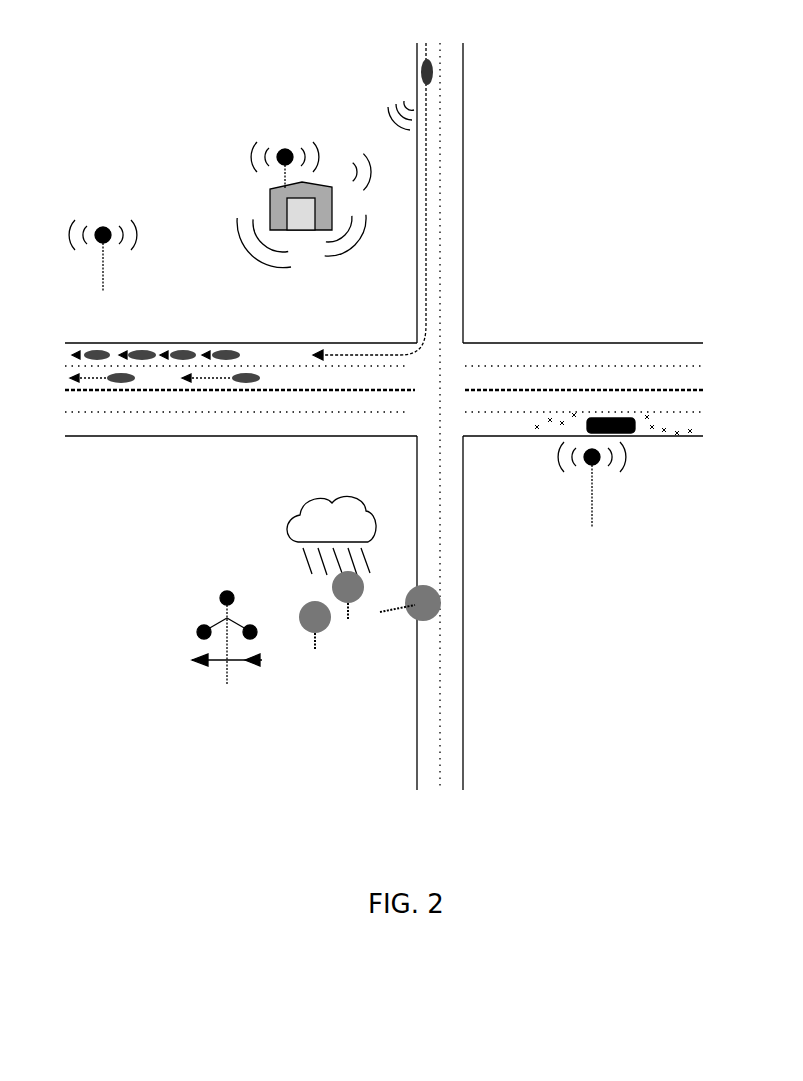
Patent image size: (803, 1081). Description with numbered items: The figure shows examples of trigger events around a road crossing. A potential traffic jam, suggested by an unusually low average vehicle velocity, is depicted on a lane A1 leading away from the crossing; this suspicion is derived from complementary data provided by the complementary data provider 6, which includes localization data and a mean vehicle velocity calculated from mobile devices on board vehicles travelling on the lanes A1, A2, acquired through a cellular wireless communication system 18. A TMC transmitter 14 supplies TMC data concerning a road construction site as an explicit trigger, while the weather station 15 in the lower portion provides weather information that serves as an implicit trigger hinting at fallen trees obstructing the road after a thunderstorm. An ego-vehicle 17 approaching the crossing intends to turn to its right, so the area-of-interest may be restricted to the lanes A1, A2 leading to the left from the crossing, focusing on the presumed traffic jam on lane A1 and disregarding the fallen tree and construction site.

The complementary data provider 6 is at (312, 122).
The TMC transmitter 14 is at (592, 492).
The weather station 15 is at (217, 667).
The ego-vehicle 17 is at (428, 62).
The cellular wireless communication system 18 is at (110, 218).
The lane A1 is at (584, 356).
The lane A2 is at (584, 377).